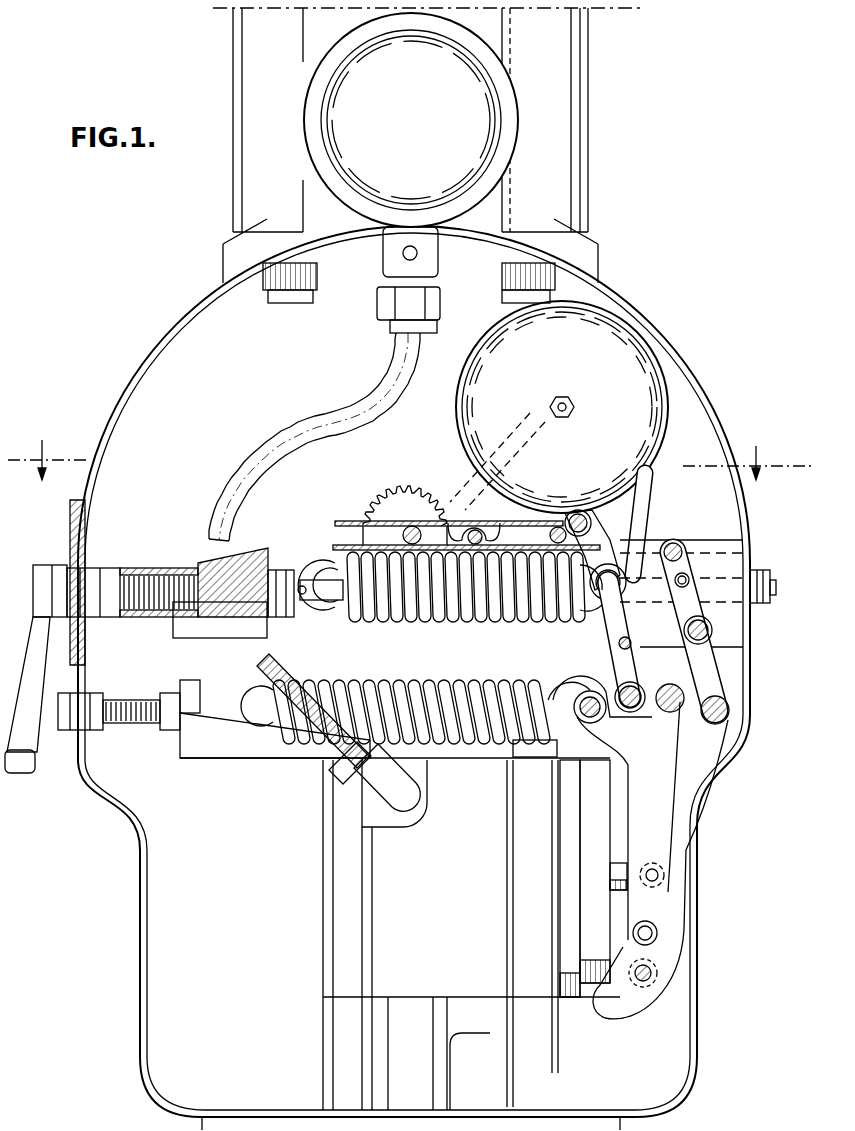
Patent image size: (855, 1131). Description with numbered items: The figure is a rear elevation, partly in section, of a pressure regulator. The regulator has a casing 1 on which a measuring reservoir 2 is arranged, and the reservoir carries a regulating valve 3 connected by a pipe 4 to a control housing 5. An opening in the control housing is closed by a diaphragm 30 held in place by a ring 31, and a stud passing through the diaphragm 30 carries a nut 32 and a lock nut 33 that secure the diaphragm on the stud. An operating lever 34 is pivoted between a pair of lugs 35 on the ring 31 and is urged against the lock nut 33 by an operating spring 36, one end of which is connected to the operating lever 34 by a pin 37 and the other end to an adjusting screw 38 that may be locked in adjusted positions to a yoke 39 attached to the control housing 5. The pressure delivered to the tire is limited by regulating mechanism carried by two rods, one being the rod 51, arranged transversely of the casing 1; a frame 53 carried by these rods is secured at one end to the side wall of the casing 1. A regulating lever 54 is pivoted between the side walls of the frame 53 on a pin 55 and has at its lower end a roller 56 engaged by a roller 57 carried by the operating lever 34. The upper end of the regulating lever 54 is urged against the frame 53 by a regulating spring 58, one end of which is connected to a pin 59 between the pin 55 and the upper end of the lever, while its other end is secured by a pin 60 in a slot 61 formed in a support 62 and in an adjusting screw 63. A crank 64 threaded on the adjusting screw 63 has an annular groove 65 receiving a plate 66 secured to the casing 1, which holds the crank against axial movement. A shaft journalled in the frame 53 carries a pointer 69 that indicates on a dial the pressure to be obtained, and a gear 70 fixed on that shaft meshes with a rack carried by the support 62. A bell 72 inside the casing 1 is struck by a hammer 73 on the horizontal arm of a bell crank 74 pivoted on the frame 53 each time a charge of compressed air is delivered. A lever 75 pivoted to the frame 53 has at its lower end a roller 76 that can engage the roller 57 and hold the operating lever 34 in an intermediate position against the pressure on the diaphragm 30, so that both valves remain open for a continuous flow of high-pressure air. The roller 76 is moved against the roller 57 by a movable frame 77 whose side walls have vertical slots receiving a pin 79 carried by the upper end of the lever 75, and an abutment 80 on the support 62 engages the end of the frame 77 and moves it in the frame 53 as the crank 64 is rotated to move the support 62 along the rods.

The casing 1 is at (135, 920).
The measuring reservoir 2 is at (588, 120).
The regulating valve 3 is at (470, 95).
The pipe 4 is at (352, 400).
The control housing 5 is at (330, 933).
The diaphragm 30 is at (587, 830).
The ring 31 is at (600, 903).
The nut 32 is at (610, 875).
The lock nut 33 is at (652, 890).
The operating lever 34 is at (667, 813).
The lugs 35 is at (640, 1012).
The operating spring 36 is at (490, 742).
The pin 37 is at (583, 695).
The adjusting screw 38 is at (122, 724).
The yoke 39 is at (255, 752).
The rod 51 is at (772, 582).
The frame 53 is at (727, 603).
The regulating lever 54 is at (615, 673).
The pin 55 is at (615, 648).
The roller 56 is at (620, 690).
The roller 57 is at (675, 705).
The regulating spring 58 is at (445, 615).
The pin 59 is at (620, 576).
The pin 60 is at (310, 597).
The slot 61 is at (283, 600).
The support 62 is at (200, 560).
The adjusting screw 63 is at (192, 605).
The crank 64 is at (102, 585).
The annular groove 65 is at (60, 590).
The plate 66 is at (72, 545).
The pointer 69 is at (440, 470).
The gear 70 is at (395, 490).
The bell 72 is at (672, 412).
The hammer 73 is at (543, 545).
The bell crank 74 is at (652, 478).
The lever 75 is at (720, 666).
The roller 76 is at (730, 715).
The movable frame 77 is at (348, 520).
The pin 79 is at (680, 545).
The abutment 80 is at (268, 552).